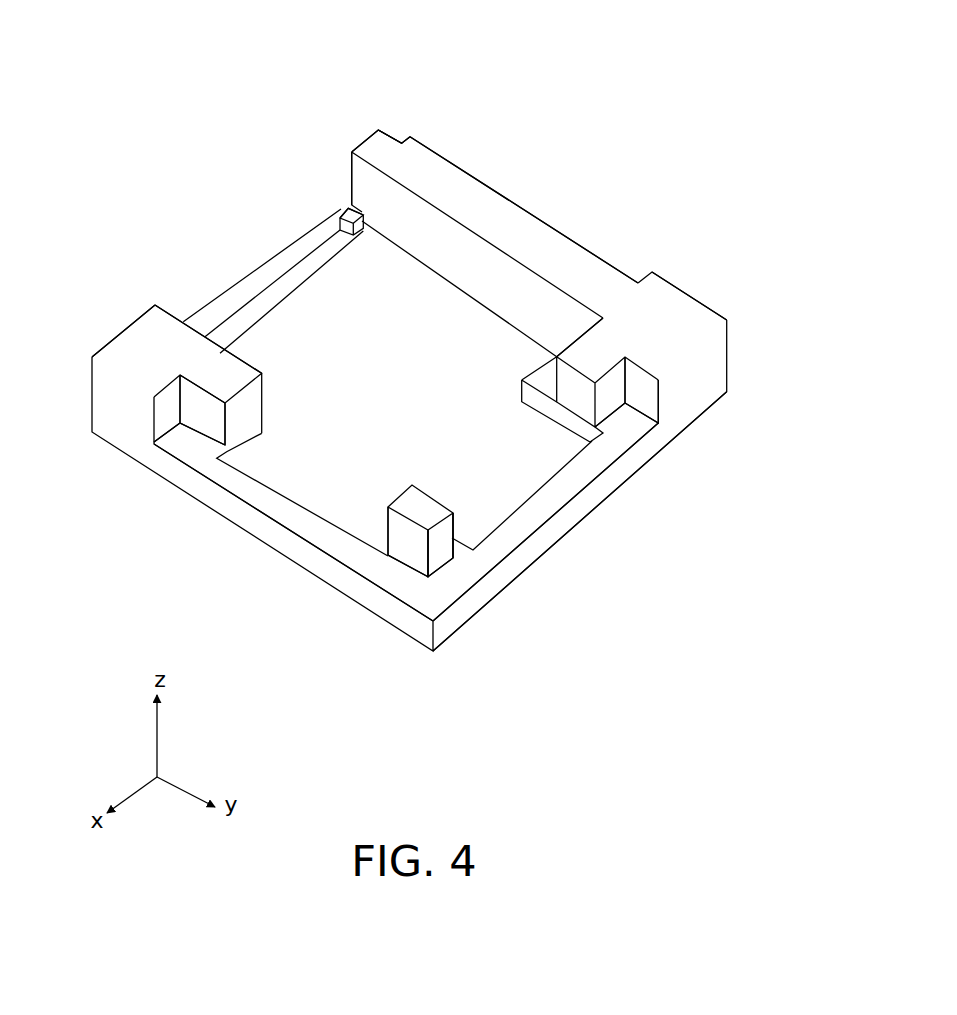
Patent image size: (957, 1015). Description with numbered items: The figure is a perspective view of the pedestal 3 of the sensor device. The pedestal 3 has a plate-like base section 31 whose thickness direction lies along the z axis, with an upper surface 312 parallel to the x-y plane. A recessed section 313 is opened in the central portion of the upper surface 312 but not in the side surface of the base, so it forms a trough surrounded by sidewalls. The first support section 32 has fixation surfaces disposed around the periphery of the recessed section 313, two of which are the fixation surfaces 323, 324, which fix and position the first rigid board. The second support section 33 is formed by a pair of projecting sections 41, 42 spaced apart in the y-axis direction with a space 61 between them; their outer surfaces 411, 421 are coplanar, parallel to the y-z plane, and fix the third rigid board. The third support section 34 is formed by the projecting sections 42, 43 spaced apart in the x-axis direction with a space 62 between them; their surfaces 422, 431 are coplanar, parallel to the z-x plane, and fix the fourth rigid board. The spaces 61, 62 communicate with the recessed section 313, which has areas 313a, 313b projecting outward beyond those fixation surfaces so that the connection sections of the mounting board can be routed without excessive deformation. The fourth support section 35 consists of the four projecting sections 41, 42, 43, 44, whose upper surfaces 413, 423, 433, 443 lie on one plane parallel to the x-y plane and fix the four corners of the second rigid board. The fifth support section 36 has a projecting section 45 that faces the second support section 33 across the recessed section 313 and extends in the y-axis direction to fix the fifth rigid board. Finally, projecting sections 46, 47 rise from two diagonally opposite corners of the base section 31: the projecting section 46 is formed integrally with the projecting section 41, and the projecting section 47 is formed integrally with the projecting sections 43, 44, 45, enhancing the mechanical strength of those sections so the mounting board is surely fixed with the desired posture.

The pedestal 3 is at (567, 93).
The base section 31 is at (297, 547).
The upper surface 312 is at (570, 485).
The recessed section 313 is at (300, 290).
The area 313a is at (280, 477).
The area 313b is at (502, 467).
The first support section 32 is at (340, 204).
The fixation surface 323 is at (528, 398).
The fixation surface 324 is at (363, 234).
The second support section 33 is at (190, 425).
The third support section 34 is at (614, 404).
The fourth support section 35 is at (559, 221).
The fifth support section 36 is at (208, 366).
The projecting section 41 is at (248, 356).
The fixation surface 411 is at (212, 425).
The upper surface 413 is at (230, 383).
The projecting section 42 is at (432, 487).
The fixation surface 421 is at (410, 543).
The fixation surface 422 is at (440, 550).
The upper surface 423 is at (458, 522).
The projecting section 43 is at (552, 342).
The fixation surface 431 is at (613, 385).
The upper surface 433 is at (602, 355).
The projecting section 44 is at (352, 140).
The upper surface 443 is at (385, 147).
The projecting section 45 is at (514, 190).
The projecting section 46 is at (120, 330).
The projecting section 47 is at (680, 318).
The space 61 is at (310, 475).
The space 62 is at (560, 500).